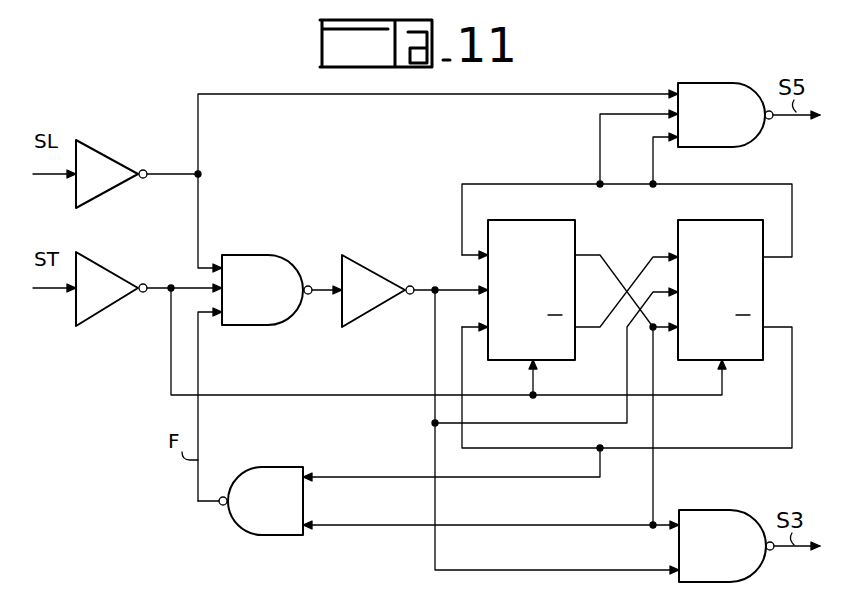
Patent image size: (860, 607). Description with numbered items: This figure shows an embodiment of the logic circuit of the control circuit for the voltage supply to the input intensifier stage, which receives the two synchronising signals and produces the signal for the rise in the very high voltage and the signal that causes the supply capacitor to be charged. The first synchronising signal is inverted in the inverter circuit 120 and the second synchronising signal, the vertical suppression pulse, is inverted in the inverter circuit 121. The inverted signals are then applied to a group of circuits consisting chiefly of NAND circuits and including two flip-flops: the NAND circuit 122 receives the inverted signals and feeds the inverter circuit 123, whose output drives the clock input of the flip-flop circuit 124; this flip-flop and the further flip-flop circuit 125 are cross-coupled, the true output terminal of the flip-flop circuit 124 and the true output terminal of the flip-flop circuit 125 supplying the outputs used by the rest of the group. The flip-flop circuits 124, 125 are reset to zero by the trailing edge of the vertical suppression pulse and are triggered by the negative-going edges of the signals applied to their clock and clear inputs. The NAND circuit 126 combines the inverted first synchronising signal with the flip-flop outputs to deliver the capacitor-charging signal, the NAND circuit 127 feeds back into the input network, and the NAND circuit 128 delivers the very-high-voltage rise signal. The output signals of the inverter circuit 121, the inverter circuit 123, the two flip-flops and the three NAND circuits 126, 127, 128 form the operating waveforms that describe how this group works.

The inverter circuit 120 is at (120, 152).
The inverter circuit 121 is at (122, 264).
The NAND circuit 122 is at (264, 252).
The inverter circuit 123 is at (372, 242).
The flip-flop circuit 124 is at (526, 218).
The flip-flop circuit 125 is at (718, 218).
The NAND circuit 126 is at (717, 78).
The NAND circuit 127 is at (258, 444).
The NAND circuit 128 is at (720, 506).